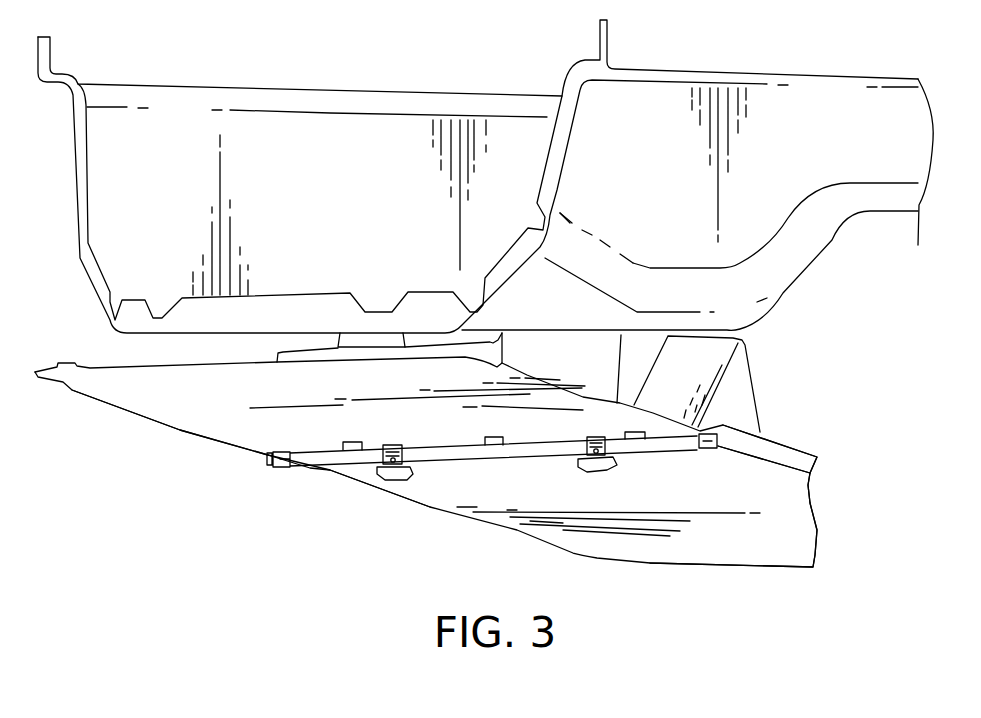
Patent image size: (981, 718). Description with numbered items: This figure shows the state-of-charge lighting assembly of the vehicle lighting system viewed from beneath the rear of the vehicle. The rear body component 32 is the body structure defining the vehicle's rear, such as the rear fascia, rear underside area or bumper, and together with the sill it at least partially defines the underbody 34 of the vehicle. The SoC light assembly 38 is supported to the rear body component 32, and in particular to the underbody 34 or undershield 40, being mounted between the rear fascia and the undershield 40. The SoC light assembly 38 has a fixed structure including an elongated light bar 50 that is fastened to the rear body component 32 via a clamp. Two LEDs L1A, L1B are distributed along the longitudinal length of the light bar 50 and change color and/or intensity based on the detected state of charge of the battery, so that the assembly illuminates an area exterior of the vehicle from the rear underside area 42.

The rear body component 32 is at (625, 424).
The underbody 34 is at (787, 441).
The SoC light assembly 38 is at (184, 482).
The undershield 40 is at (760, 543).
The rear underside area 42 is at (282, 562).
The light bar 50 is at (447, 453).
The LED L1A is at (392, 479).
The LED L1B is at (604, 470).